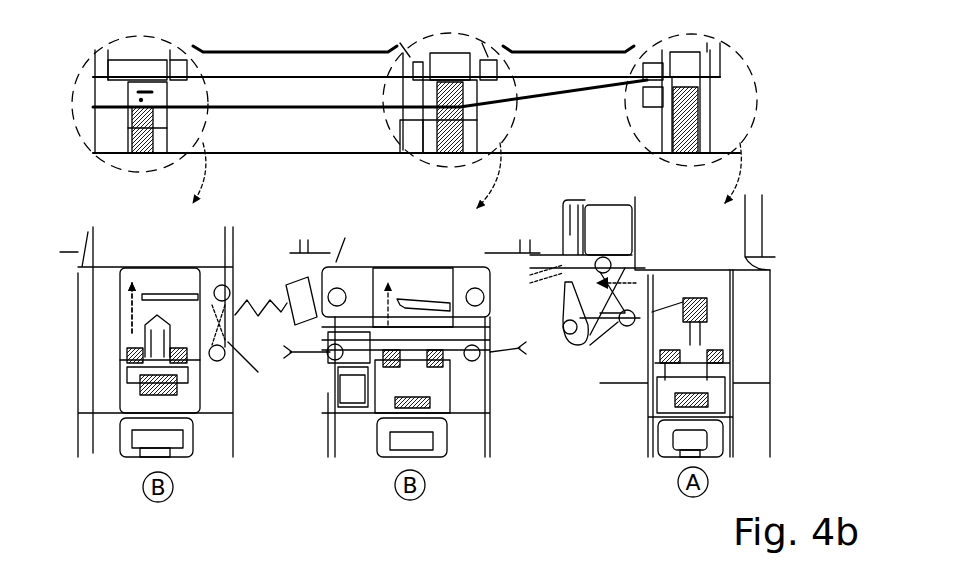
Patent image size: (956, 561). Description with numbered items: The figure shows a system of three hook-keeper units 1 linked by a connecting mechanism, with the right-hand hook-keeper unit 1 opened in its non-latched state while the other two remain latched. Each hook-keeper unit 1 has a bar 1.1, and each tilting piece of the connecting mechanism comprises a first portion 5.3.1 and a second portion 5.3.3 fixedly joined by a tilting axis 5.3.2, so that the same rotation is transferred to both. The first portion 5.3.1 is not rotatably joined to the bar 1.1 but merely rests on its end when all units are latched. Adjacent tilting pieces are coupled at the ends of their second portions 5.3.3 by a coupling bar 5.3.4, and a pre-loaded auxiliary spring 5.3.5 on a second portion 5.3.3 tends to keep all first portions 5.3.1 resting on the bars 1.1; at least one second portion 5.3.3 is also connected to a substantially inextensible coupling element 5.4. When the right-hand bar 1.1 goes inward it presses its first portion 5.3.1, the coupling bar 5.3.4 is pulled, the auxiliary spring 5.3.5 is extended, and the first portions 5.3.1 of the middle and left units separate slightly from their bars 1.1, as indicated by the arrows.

The hook-keeper unit 1 is at (123, 162).
The bar 1.1 is at (122, 312).
The first portion 5.3.1 is at (150, 297).
The tilting axis 5.3.2 is at (210, 288).
The second portion 5.3.3 is at (243, 356).
The coupling bar 5.3.4 is at (293, 110).
The auxiliary spring 5.3.5 is at (267, 300).
The coupling element 5.4 is at (565, 240).